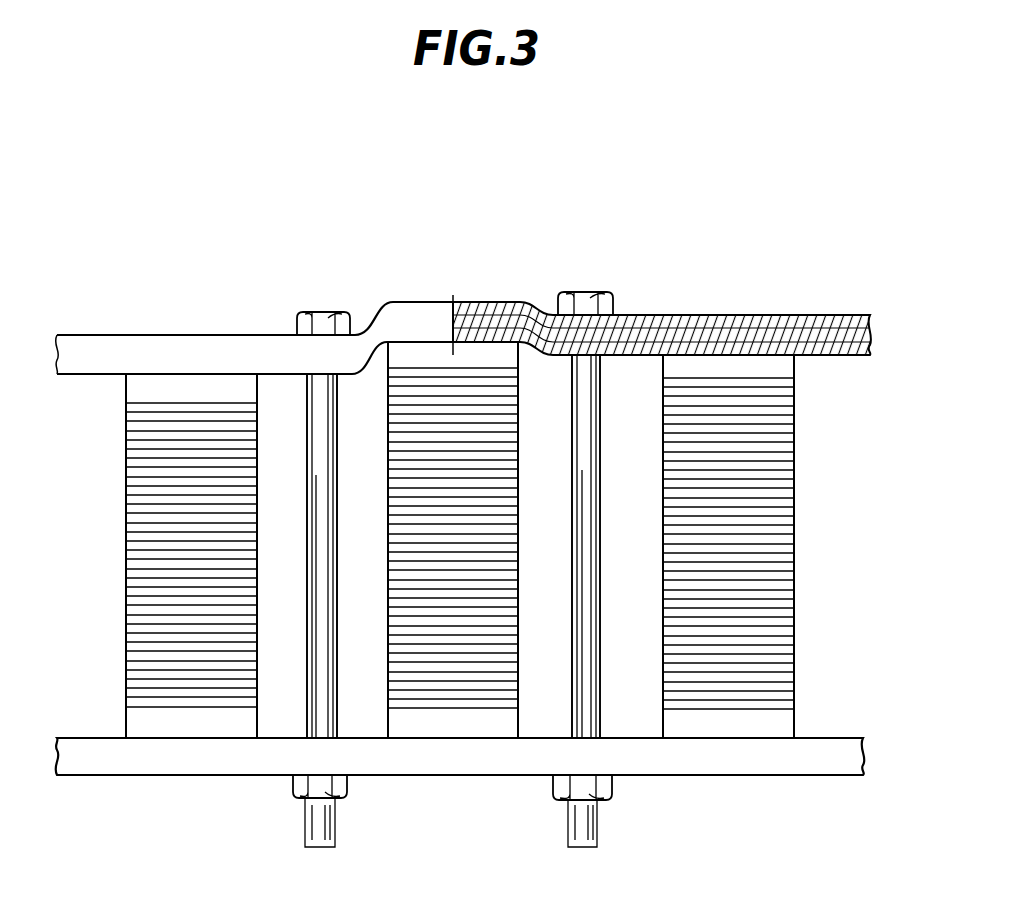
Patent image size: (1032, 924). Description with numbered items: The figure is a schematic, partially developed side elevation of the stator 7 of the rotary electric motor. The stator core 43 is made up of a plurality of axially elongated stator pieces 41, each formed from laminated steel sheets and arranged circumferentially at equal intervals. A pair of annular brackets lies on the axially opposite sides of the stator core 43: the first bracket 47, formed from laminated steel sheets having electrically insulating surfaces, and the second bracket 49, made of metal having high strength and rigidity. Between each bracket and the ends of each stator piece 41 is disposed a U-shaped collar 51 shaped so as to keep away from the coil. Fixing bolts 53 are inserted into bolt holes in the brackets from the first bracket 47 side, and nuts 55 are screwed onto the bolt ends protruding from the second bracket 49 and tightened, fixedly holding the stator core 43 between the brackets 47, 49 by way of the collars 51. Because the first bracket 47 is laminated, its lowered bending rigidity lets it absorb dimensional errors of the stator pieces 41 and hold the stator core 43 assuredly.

The stator 7 is at (656, 220).
The stator piece 41 is at (768, 537).
The stator core 43 is at (515, 540).
The first bracket 47 is at (422, 318).
The second bracket 49 is at (200, 757).
The U-shaped collar 51 is at (740, 370).
The fixing bolt 53 is at (323, 418).
The nut 55 is at (348, 797).